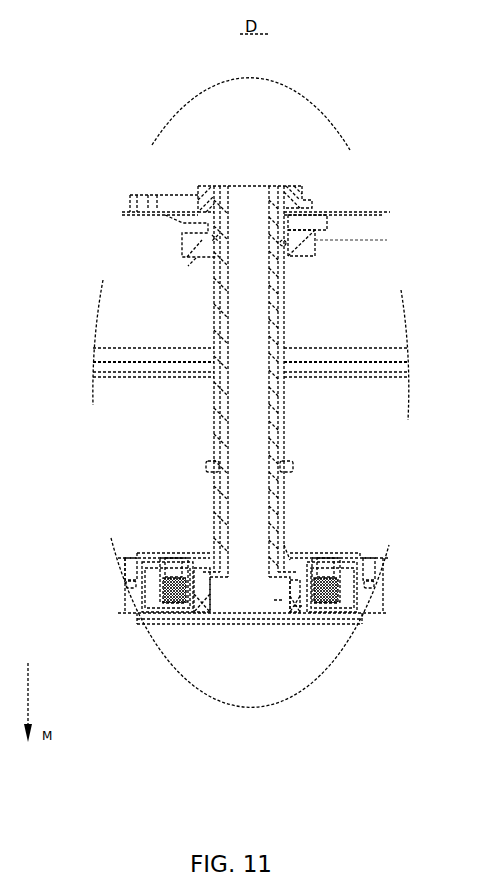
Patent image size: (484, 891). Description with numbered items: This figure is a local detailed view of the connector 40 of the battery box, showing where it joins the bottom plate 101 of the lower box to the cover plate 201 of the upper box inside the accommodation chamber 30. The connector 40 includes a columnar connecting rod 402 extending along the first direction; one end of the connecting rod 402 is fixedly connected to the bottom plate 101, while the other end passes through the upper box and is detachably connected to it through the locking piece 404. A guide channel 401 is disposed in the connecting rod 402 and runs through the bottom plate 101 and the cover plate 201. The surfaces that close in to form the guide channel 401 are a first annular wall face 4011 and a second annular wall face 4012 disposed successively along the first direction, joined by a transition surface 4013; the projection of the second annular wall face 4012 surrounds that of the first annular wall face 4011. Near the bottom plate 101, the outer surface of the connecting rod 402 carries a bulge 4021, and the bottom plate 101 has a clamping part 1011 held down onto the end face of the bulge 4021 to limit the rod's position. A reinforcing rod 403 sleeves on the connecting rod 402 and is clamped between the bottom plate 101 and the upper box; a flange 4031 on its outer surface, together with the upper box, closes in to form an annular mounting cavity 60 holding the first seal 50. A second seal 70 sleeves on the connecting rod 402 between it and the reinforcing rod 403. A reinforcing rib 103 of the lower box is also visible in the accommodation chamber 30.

The connector 40 is at (209, 176).
The locking piece 404 is at (290, 212).
The cover plate 201 is at (312, 214).
The first seal 50 is at (183, 232).
The annular mounting cavity 60 is at (328, 245).
The second seal 70 is at (287, 247).
The flange 4031 is at (196, 258).
The reinforcing rod 403 is at (216, 396).
The connecting rod 402 is at (216, 433).
The reinforcing rib 103 is at (213, 556).
The clamping part 1011 is at (317, 557).
The accommodation chamber 30 is at (132, 534).
The bottom plate 101 is at (350, 636).
The bulge 4021 is at (178, 616).
The first annular wall face 4011 is at (272, 538).
The transition surface 4013 is at (279, 600).
The second annular wall face 4012 is at (338, 675).
The guide channel 401 is at (259, 671).